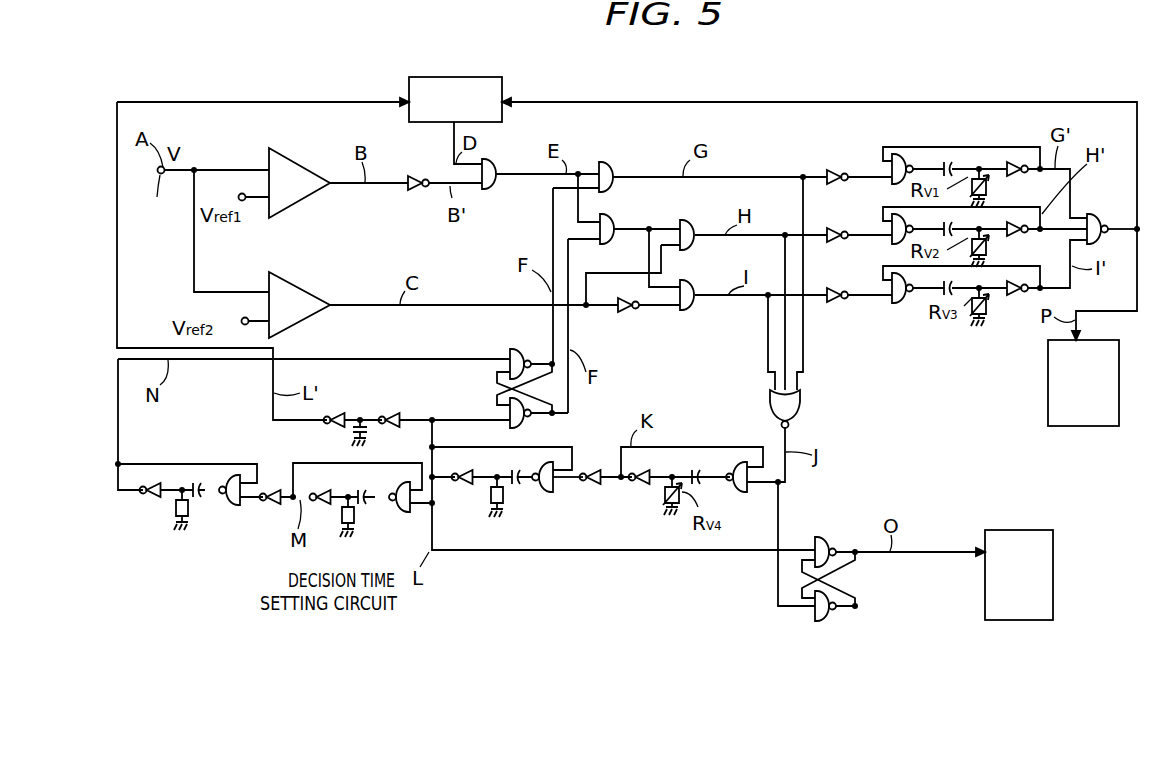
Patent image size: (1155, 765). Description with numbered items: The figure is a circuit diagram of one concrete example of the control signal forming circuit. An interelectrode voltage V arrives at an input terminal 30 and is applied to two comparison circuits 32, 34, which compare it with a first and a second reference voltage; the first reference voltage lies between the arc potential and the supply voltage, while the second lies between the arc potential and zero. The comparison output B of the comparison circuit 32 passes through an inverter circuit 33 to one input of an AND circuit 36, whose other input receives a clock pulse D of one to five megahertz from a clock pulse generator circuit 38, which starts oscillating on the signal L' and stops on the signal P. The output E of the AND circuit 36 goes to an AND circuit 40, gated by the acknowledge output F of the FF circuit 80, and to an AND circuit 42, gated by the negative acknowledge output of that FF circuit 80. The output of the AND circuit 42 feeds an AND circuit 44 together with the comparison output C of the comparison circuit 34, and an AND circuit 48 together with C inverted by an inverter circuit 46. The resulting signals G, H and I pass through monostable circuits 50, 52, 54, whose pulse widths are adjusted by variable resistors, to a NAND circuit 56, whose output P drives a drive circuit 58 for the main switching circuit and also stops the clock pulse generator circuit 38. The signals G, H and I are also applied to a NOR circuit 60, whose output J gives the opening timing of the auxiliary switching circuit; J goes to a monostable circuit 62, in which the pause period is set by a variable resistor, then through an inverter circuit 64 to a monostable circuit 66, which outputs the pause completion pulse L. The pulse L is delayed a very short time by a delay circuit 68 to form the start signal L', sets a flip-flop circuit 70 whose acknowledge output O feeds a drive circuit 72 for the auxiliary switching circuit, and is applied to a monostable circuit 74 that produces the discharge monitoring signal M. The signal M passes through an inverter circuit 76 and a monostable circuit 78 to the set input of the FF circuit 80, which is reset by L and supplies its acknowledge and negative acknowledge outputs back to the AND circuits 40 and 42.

The input terminal 30 is at (160, 175).
The comparison circuit 32 is at (303, 166).
The inverter circuit 33 is at (411, 191).
The comparison circuit 34 is at (318, 290).
The AND circuit 36 is at (492, 164).
The clock pulse generator circuit 38 is at (502, 88).
The AND circuit 40 is at (605, 164).
The AND circuit 42 is at (617, 221).
The AND circuit 44 is at (689, 222).
The inverter circuit 46 is at (629, 311).
The AND circuit 48 is at (690, 283).
The monostable circuit 50 is at (978, 147).
The monostable circuit 52 is at (1000, 208).
The monostable circuit 54 is at (922, 290).
The NAND circuit 56 is at (1095, 213).
The drive circuit 58 is at (1090, 427).
The NOR circuit 60 is at (798, 410).
The monostable circuit 62 is at (698, 447).
The inverter circuit 64 is at (593, 466).
The monostable circuit 66 is at (516, 486).
The delay circuit 68 is at (360, 417).
The flip-flop circuit 70 is at (853, 578).
The drive circuit 72 is at (1054, 587).
The monostable circuit 74 is at (383, 526).
The inverter circuit 76 is at (273, 503).
The monostable circuit 78 is at (200, 503).
The FF circuit 80 is at (497, 388).